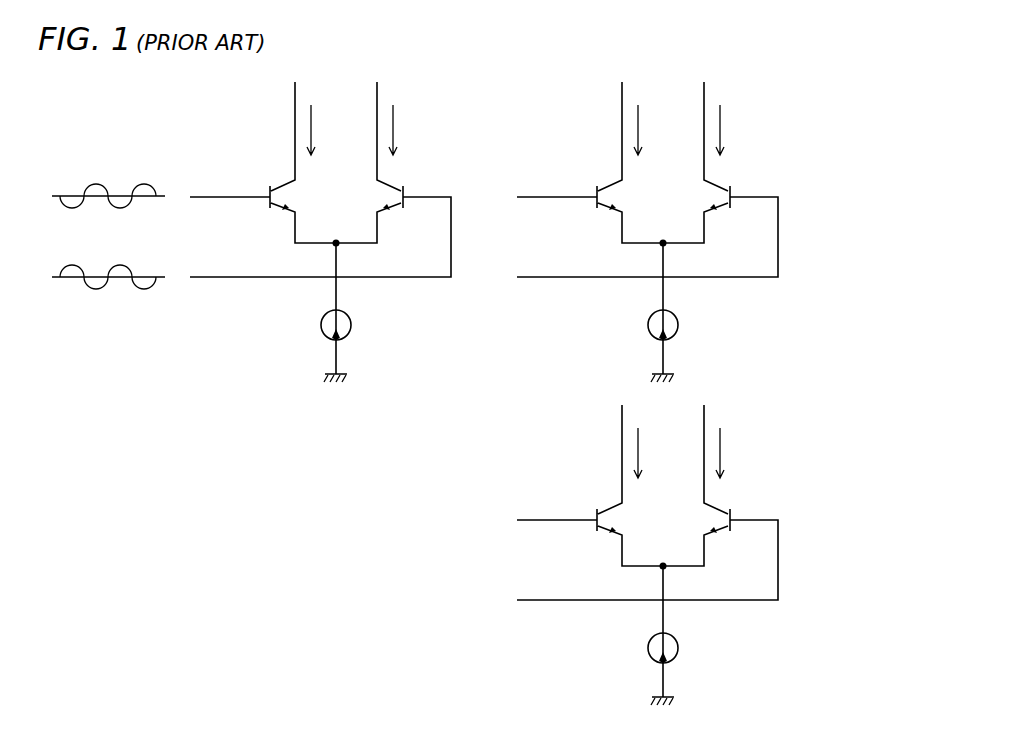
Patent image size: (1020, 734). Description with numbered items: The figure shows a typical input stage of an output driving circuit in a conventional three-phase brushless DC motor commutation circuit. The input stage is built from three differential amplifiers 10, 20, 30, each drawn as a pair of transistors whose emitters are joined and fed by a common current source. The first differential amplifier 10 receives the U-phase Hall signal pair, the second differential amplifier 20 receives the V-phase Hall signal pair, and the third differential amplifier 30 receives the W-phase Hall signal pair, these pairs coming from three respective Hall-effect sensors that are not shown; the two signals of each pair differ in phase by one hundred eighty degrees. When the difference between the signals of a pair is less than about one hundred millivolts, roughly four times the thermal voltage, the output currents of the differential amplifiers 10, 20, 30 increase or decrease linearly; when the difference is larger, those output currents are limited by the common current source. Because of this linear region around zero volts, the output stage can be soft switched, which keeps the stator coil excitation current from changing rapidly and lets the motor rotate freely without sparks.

The differential amplifier 10 is at (430, 139).
The differential amplifier 20 is at (757, 139).
The differential amplifier 30 is at (757, 462).